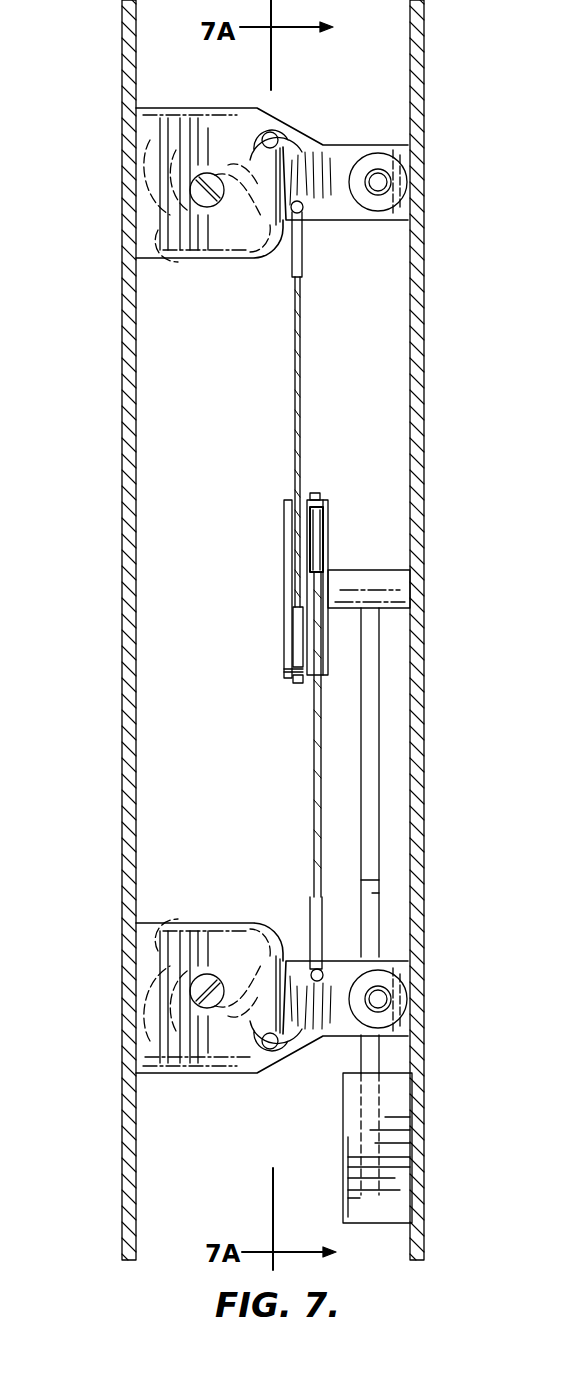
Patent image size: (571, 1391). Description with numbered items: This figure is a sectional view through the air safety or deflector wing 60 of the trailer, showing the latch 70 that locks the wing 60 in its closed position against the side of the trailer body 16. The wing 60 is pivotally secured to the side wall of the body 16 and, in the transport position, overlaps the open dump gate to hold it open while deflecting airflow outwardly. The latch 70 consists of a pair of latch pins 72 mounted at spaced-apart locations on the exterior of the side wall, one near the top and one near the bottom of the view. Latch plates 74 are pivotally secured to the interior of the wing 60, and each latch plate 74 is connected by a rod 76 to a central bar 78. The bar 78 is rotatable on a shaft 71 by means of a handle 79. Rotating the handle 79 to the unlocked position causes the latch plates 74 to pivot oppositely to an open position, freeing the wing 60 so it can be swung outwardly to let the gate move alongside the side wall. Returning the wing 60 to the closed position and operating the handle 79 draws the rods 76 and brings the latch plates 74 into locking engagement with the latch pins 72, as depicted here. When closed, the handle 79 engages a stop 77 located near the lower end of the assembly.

The body 16 is at (122, 340).
The air safety or deflector wing 60 is at (427, 532).
The latch 70 is at (470, 254).
The shaft 71 is at (350, 570).
The latch pins 72 is at (217, 1057).
The latch plates 74 is at (157, 228).
The rods 76 is at (292, 375).
The stop 77 is at (340, 1118).
The bar 78 is at (330, 500).
The handle 79 is at (425, 748).